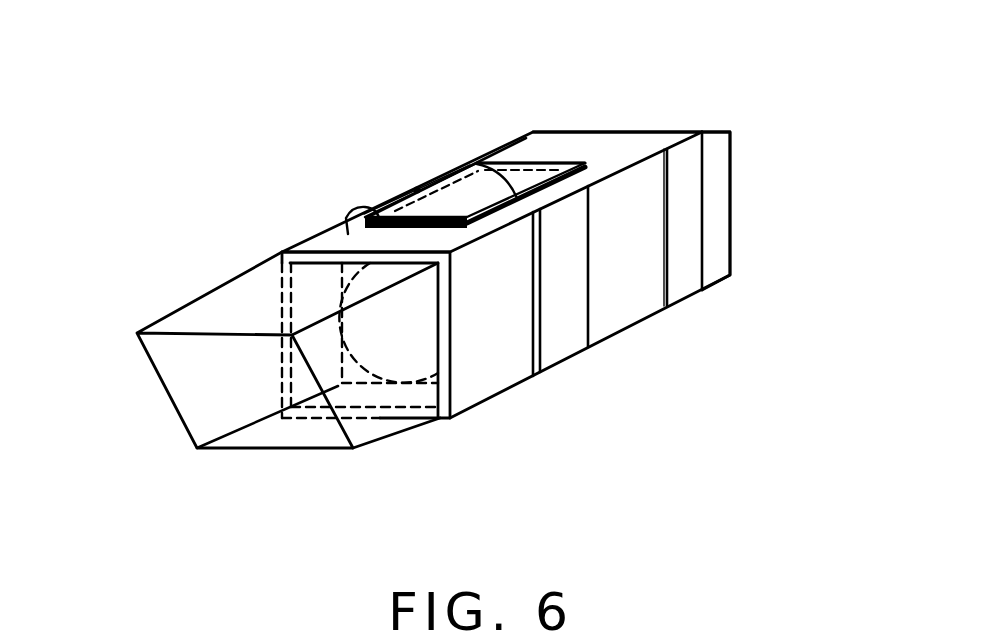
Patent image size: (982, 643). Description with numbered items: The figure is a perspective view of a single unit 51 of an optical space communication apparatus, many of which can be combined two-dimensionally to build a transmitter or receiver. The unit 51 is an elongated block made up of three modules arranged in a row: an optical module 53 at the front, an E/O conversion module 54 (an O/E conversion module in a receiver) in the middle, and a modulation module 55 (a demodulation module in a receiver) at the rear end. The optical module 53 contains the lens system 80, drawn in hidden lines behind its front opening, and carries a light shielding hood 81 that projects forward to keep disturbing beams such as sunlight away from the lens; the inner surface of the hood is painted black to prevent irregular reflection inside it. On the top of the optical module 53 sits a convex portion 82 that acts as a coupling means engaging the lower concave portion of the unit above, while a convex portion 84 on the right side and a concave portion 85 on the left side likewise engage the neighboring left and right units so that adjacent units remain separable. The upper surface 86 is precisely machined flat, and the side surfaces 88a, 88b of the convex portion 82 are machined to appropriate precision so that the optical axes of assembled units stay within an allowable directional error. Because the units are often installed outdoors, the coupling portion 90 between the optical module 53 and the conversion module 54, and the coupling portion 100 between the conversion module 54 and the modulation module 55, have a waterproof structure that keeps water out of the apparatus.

The unit 51 is at (527, 131).
The optical module 53 is at (297, 243).
The E/O conversion module 54 is at (637, 138).
The modulation module 55 is at (718, 168).
The lens system 80 is at (413, 368).
The light shielding hood 81 is at (220, 318).
The convex portion 82 is at (448, 183).
The convex portion 84 is at (570, 367).
The concave portion 85 is at (393, 198).
The upper surface 86 is at (518, 154).
The side surface of convex portion 88a is at (355, 224).
The side surface of convex portion 88b is at (417, 190).
The coupling portion 90 is at (663, 307).
The coupling portion 100 is at (700, 283).